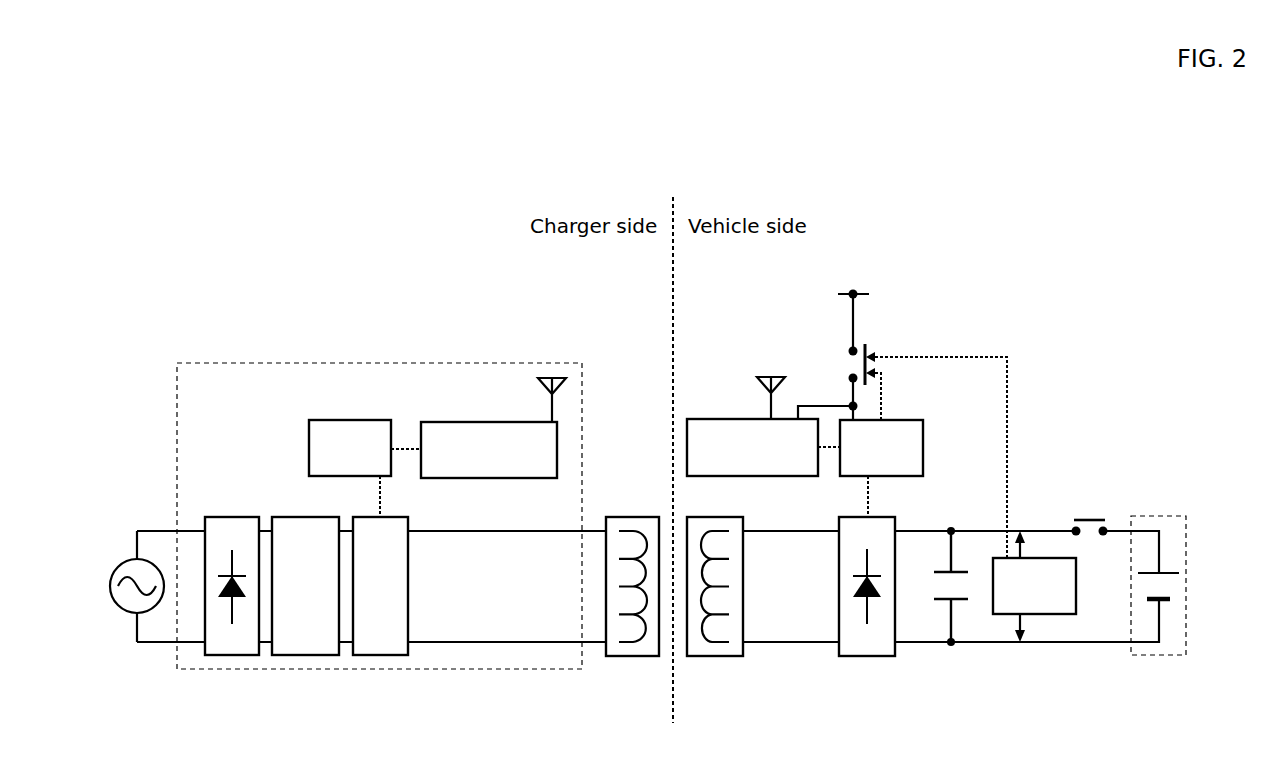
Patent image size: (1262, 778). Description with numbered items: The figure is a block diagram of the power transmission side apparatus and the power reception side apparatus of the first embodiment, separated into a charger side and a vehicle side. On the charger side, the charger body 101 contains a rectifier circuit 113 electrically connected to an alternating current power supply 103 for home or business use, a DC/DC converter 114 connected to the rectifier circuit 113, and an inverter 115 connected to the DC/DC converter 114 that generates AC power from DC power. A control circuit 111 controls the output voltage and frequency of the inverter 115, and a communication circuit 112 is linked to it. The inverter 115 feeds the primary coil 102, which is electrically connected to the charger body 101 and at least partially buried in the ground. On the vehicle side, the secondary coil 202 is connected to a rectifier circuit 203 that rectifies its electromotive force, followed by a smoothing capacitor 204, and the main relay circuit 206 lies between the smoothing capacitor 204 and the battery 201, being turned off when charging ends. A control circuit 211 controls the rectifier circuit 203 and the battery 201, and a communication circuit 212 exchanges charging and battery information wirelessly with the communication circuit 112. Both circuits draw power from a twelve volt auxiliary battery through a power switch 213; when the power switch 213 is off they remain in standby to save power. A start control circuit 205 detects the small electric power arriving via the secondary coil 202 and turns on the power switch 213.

The charger body 101 is at (236, 363).
The primary coil 102 is at (633, 517).
The alternating current power supply 103 is at (119, 567).
The control circuit 111 is at (375, 420).
The communication circuit 112 is at (537, 421).
The rectifier circuit 113 is at (223, 517).
The DC/DC converter 114 is at (292, 517).
The inverter 115 is at (385, 515).
The battery 201 is at (1159, 516).
The secondary coil 202 is at (720, 517).
The rectifier circuit 203 is at (867, 656).
The smoothing capacitor 204 is at (966, 626).
The start control circuit 205 is at (1030, 614).
The main relay circuit 206 is at (1090, 514).
The control circuit 211 is at (923, 432).
The communication circuit 212 is at (730, 419).
The power switch 213 is at (870, 331).